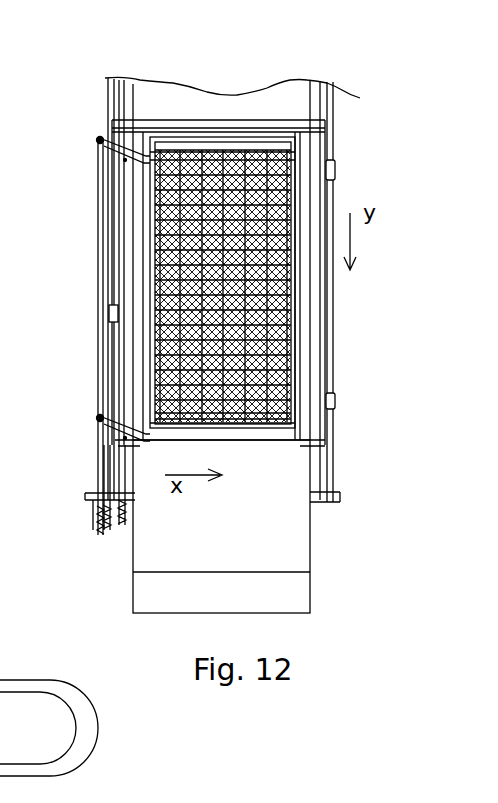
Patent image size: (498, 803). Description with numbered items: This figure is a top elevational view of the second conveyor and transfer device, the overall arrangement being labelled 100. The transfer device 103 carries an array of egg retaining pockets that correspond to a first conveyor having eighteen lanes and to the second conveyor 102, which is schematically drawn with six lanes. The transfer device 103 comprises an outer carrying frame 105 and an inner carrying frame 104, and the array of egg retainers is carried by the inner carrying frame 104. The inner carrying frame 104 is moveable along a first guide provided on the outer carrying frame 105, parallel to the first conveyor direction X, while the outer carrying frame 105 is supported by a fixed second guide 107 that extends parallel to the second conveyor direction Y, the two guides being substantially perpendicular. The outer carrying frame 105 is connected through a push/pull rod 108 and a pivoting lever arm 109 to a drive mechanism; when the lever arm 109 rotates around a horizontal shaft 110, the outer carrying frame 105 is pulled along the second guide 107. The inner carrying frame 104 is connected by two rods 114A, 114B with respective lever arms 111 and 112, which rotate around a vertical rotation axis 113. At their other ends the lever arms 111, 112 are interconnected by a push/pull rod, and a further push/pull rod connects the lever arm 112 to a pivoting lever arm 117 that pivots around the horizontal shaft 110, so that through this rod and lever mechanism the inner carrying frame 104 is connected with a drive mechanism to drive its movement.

The system 100 is at (0, 712).
The second conveyor 102 is at (265, 530).
The transfer device 103 is at (368, 174).
The inner carrying frame 104 is at (210, 142).
The outer carrying frame 105 is at (280, 127).
The second guide 107 is at (113, 305).
The push/pull rod 108 is at (110, 467).
The pivoting lever arm 109 is at (118, 537).
The horizontal shaft 110 is at (86, 500).
The lever arm 111 is at (97, 160).
The lever arm 112 is at (97, 416).
The vertical rotation axis 113 is at (122, 160).
The rod 114A is at (172, 150).
The rod 114B is at (240, 427).
The pivoting lever arm 117 is at (86, 512).